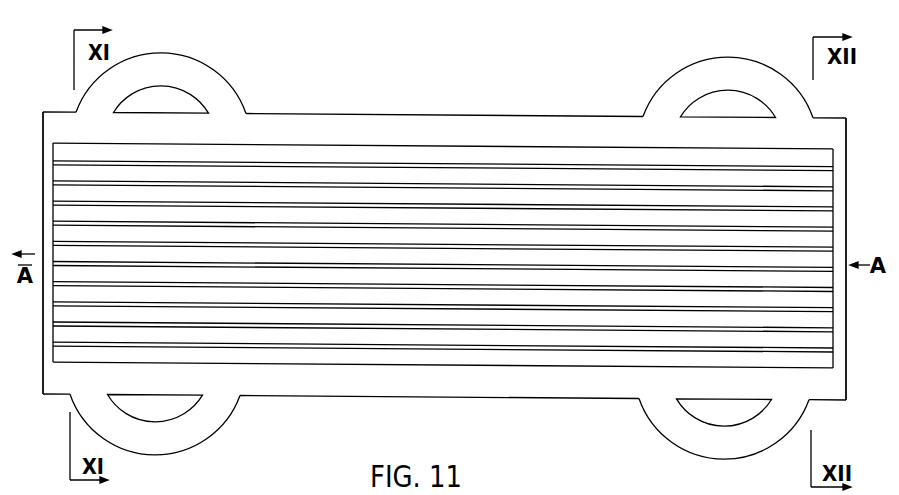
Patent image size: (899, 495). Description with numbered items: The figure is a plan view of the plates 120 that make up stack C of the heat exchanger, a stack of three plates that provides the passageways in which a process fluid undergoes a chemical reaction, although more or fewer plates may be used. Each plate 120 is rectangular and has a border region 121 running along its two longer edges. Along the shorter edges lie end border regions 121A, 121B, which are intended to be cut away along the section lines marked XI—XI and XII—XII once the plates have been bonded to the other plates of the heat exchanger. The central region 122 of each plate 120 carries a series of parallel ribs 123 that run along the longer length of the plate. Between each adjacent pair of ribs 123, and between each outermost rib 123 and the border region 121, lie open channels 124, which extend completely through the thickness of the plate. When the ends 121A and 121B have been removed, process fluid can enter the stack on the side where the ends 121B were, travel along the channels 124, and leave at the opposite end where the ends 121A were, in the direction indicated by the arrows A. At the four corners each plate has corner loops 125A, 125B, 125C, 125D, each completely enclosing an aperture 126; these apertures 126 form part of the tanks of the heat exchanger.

The plate 120 is at (461, 106).
The border region 121 is at (367, 132).
The border region along shorter edge 121A is at (43, 352).
The border region along shorter edge 121B is at (838, 365).
The central region 122 is at (521, 298).
The rib 123 is at (582, 167).
The open channel 124 is at (277, 215).
The corner loop 125A is at (227, 100).
The corner loop 125B is at (763, 432).
The corner loop 125C is at (763, 87).
The corner loop 125D is at (193, 422).
The aperture 126 is at (166, 90).